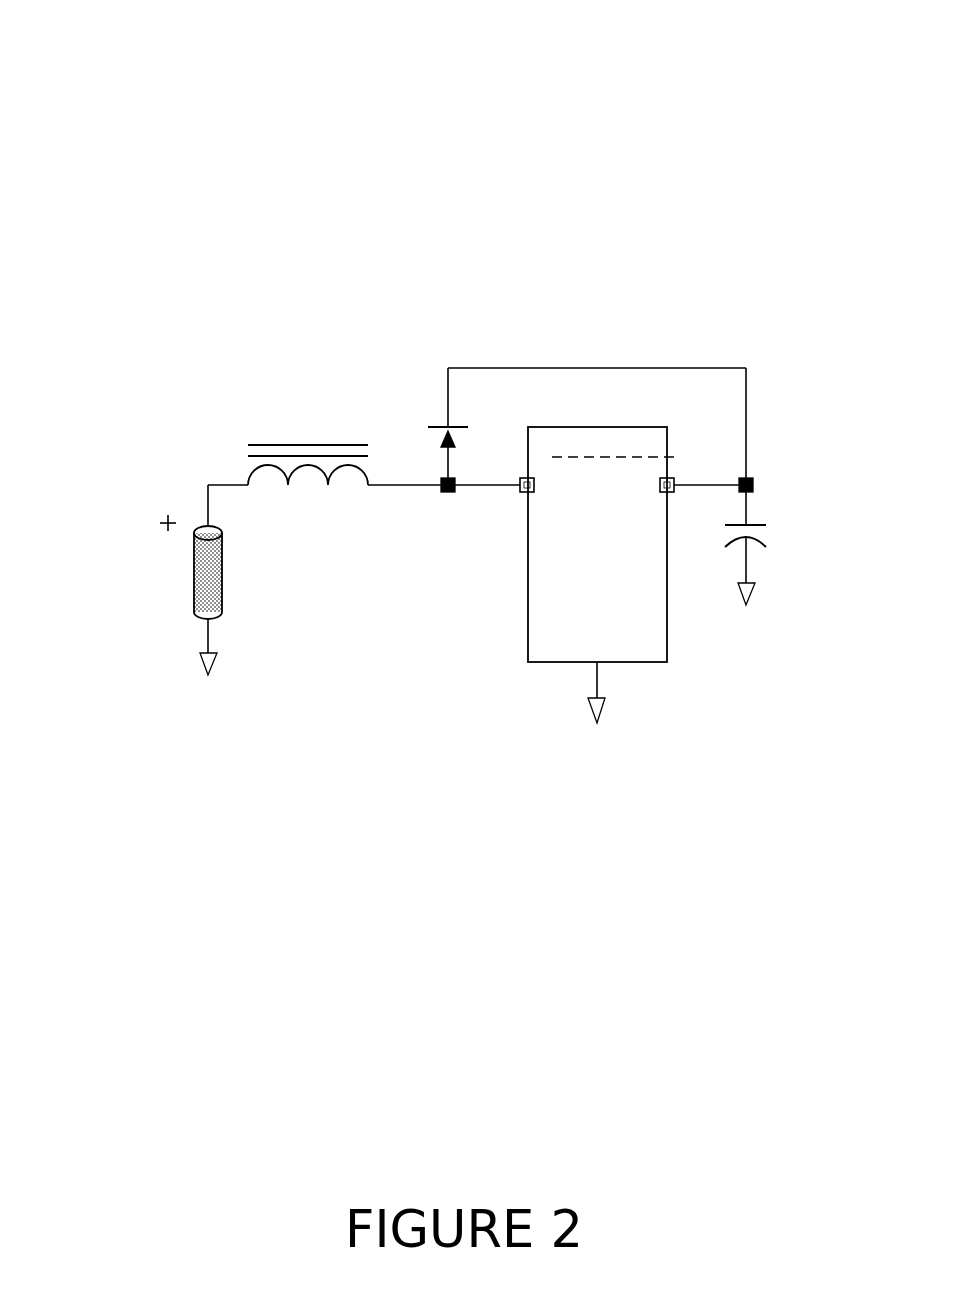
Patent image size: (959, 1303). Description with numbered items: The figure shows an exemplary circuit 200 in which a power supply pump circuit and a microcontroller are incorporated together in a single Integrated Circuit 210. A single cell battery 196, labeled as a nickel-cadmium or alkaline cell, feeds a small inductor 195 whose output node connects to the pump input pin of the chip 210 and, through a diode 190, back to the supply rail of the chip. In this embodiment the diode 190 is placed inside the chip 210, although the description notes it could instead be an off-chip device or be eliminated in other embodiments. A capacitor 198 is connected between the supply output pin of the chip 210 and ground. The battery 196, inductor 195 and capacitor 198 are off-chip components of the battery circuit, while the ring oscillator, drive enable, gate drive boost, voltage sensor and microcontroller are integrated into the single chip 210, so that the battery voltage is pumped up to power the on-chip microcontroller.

The power supply circuit 200 is at (48, 23).
The inductor 195 is at (308, 425).
The diode 190 is at (430, 417).
The single cell battery 196 is at (180, 575).
The capacitor 198 is at (780, 519).
The single Integrated Circuit 210 is at (516, 623).